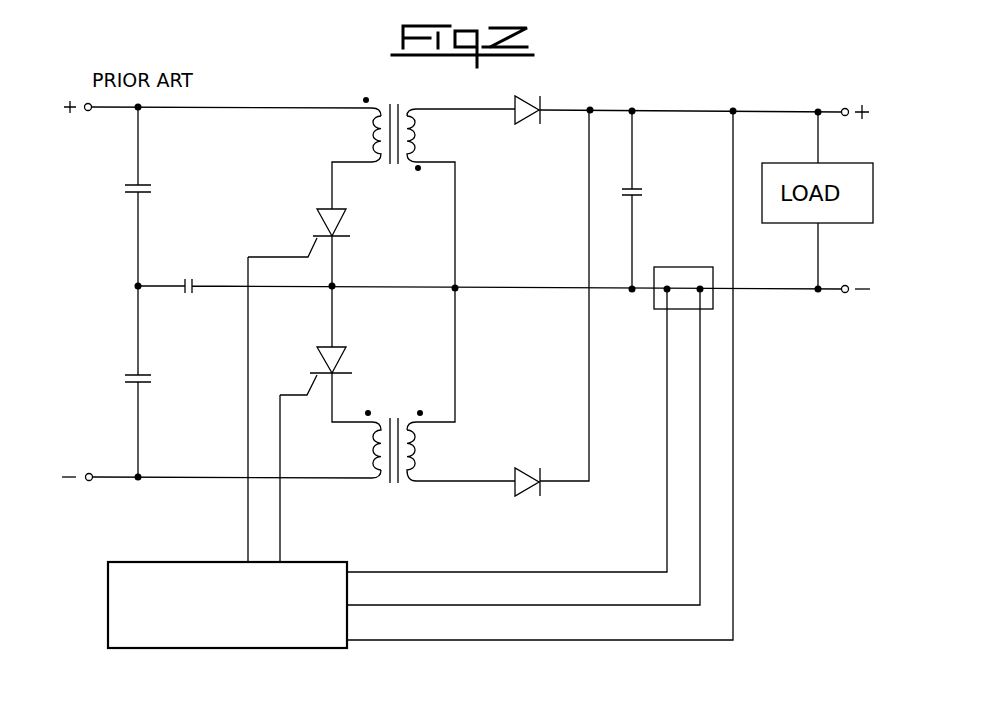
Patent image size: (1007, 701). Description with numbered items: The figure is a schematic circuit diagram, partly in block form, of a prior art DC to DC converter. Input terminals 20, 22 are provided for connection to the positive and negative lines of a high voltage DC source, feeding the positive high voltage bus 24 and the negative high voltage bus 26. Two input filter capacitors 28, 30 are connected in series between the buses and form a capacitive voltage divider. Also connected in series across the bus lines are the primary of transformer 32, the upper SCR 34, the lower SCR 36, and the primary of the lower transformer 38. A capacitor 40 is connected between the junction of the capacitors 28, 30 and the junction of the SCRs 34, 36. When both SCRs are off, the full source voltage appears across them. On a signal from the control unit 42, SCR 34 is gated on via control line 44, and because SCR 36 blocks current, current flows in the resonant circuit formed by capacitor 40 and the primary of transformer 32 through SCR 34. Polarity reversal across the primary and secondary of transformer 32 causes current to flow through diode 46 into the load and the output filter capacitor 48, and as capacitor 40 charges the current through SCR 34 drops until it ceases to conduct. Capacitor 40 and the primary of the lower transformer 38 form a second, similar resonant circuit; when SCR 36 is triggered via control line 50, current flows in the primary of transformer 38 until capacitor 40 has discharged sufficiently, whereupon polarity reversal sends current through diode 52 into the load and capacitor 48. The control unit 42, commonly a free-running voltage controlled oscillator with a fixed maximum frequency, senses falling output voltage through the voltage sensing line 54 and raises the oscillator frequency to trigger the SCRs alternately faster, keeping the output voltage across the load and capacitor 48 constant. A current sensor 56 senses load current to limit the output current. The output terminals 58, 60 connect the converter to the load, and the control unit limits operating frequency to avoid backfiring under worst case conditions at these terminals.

The input terminal 20 is at (86, 113).
The input terminal 22 is at (92, 473).
The positive high voltage bus 24 is at (275, 106).
The negative high voltage bus 26 is at (220, 477).
The input filter capacitor 28 is at (122, 191).
The input filter capacitor 30 is at (122, 378).
The transformer 32 is at (404, 177).
The upper SCR 34 is at (320, 218).
The lower SCR 36 is at (320, 358).
The lower transformer 38 is at (381, 493).
The capacitor 40 is at (190, 278).
The control unit 42 is at (174, 576).
The control line 44 is at (246, 349).
The diode 46 is at (531, 124).
The output filter capacitor 48 is at (644, 190).
The control line 50 is at (281, 469).
The diode 52 is at (526, 470).
The voltage sensing line 54 is at (735, 626).
The current sensor 56 is at (682, 268).
The output terminal 58 is at (848, 104).
The output terminal 60 is at (845, 300).